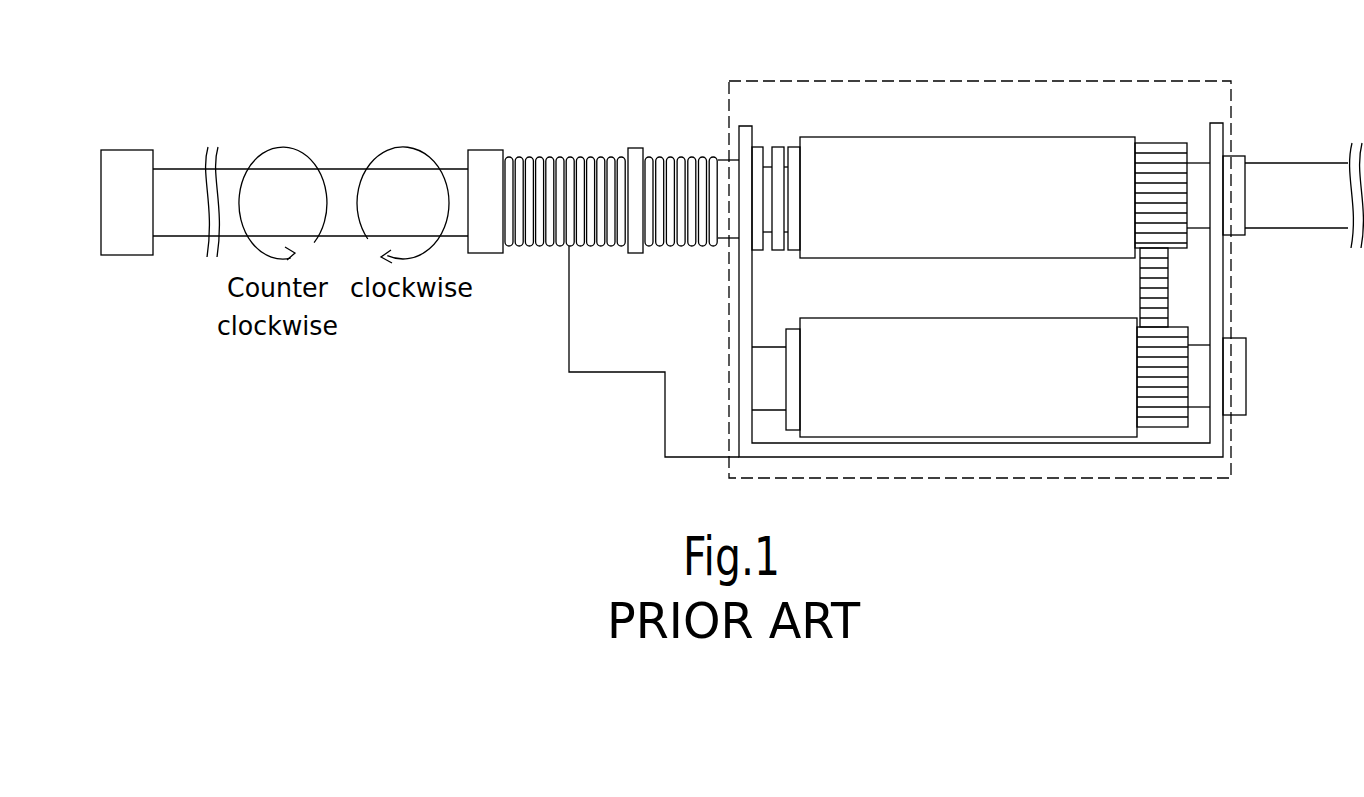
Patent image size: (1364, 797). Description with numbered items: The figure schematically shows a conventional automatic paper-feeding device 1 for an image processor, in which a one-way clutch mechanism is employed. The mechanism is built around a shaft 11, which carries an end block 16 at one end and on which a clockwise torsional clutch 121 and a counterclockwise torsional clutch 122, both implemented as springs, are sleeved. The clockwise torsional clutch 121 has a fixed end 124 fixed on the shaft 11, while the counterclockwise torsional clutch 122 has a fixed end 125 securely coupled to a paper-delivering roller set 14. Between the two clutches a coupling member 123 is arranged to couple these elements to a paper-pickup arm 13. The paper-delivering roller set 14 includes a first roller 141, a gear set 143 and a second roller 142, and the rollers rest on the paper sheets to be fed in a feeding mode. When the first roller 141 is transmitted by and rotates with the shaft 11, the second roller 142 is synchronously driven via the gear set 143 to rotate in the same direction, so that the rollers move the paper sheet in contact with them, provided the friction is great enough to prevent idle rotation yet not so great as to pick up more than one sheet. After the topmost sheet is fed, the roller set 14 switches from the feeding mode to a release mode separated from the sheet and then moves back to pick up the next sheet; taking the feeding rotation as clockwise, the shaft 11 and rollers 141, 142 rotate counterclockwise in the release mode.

The driving device (prior art) 1 is at (637, 58).
The shaft 11 is at (198, 225).
The paper-pickup arm 13 is at (682, 353).
The paper-delivering roller set 14 is at (1040, 281).
The end block 16 is at (125, 163).
The clockwise torsional clutch 121 is at (557, 167).
The counterclockwise torsional clutch 122 is at (687, 227).
The coupling member 123 is at (633, 162).
The fixed end 124 is at (485, 160).
The fixed end 125 is at (732, 167).
The first roller 141 is at (1042, 153).
The second roller 142 is at (1018, 409).
The gear set 143 is at (1160, 292).